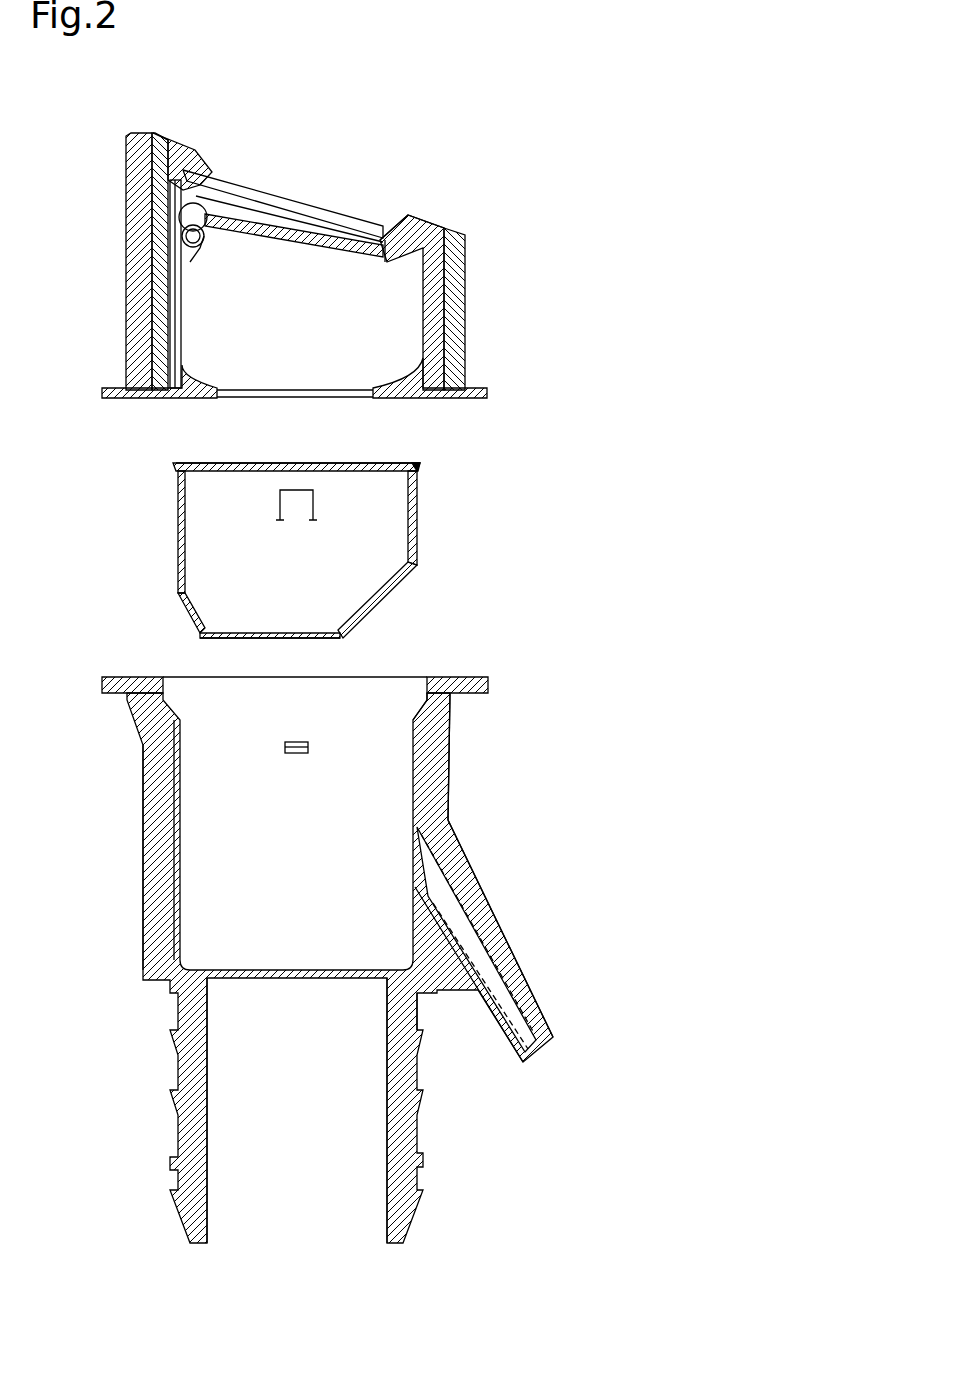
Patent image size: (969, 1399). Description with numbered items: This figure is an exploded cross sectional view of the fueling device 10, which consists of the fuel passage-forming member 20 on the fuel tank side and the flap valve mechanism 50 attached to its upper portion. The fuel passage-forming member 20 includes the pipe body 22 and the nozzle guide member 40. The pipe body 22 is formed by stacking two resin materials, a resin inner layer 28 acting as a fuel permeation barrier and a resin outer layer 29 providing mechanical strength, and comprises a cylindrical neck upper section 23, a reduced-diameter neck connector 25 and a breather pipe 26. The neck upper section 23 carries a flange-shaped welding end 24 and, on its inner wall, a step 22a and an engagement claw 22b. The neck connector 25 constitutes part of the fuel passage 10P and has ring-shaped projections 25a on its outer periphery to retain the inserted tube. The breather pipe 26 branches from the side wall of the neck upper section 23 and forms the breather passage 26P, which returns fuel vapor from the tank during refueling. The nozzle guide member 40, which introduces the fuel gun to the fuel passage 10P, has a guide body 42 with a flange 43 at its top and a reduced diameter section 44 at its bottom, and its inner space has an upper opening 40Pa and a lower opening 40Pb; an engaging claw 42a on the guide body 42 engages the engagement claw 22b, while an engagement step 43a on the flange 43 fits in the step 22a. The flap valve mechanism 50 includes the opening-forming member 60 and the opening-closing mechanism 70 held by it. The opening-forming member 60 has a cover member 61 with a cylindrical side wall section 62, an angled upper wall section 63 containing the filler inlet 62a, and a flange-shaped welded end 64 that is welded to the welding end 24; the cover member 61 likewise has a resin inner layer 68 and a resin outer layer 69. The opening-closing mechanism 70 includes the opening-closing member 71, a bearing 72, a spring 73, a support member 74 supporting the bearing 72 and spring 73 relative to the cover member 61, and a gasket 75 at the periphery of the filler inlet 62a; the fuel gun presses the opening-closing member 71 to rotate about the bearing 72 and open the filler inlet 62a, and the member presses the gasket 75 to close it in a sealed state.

The fueling device 10 is at (522, 162).
The fuel passage 10P is at (323, 936).
The fuel passage-forming member 20 is at (680, 493).
The pipe body 22 is at (603, 793).
The step 22a is at (413, 722).
The engagement claw 22b is at (285, 747).
The neck upper section 23 is at (452, 818).
The welding end 24 is at (102, 680).
The neck connector 25 is at (405, 1117).
The ring-shaped projection 25a is at (418, 1038).
The breather pipe 26 is at (490, 907).
The breather passage 26P is at (472, 988).
The resin inner layer 28 is at (172, 803).
The resin outer layer 29 is at (143, 870).
The nozzle guide member 40 is at (600, 458).
The upper opening 40Pa is at (240, 463).
The lower opening 40Pb is at (222, 635).
The guide body 42 is at (417, 520).
The engaging claw 42a is at (294, 500).
The flange 43 is at (418, 466).
The engagement step 43a is at (440, 440).
The reduced diameter section 44 is at (383, 593).
The flap valve mechanism 50 is at (460, 208).
The opening-forming member 60 is at (295, 265).
The cover member 61 is at (552, 227).
The side wall section 62 is at (466, 310).
The filler inlet 62a is at (386, 226).
The upper wall section 63 is at (466, 233).
The welded end 64 is at (487, 390).
The resin inner layer 68 is at (127, 177).
The resin outer layer 69 is at (170, 250).
The opening-closing mechanism 70 is at (360, 70).
The opening-closing member 71 is at (270, 222).
The bearing 72 is at (183, 170).
The spring 73 is at (187, 268).
The support member 74 is at (253, 232).
The gasket 75 is at (203, 205).